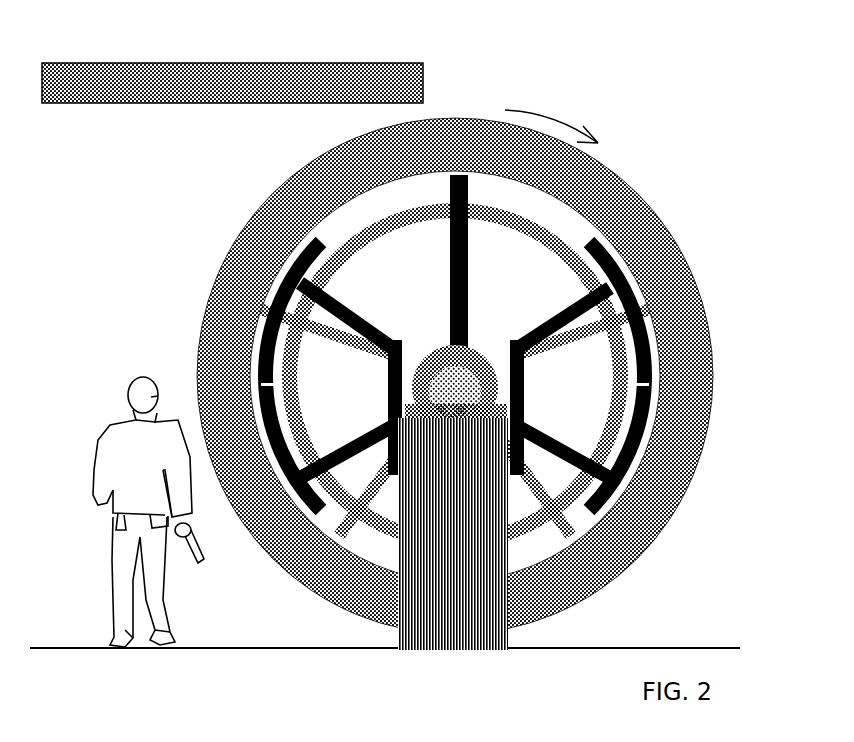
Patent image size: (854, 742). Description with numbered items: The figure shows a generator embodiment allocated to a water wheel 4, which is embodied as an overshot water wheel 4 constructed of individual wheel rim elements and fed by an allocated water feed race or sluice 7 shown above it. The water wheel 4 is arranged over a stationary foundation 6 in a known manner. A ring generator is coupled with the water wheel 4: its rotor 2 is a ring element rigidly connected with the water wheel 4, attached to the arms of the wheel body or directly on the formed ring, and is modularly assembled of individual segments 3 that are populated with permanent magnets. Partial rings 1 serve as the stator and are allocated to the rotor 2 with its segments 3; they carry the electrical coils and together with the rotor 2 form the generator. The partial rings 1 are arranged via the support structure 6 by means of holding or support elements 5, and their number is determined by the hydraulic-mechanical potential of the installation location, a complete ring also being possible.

The partial rings 1 is at (457, 376).
The rotor 2 is at (455, 376).
The segments 3 is at (455, 376).
The water wheel 4 is at (476, 376).
The holding or support elements 5 is at (455, 326).
The foundation 6 is at (468, 552).
The water feed race or sluice 7 is at (232, 83).